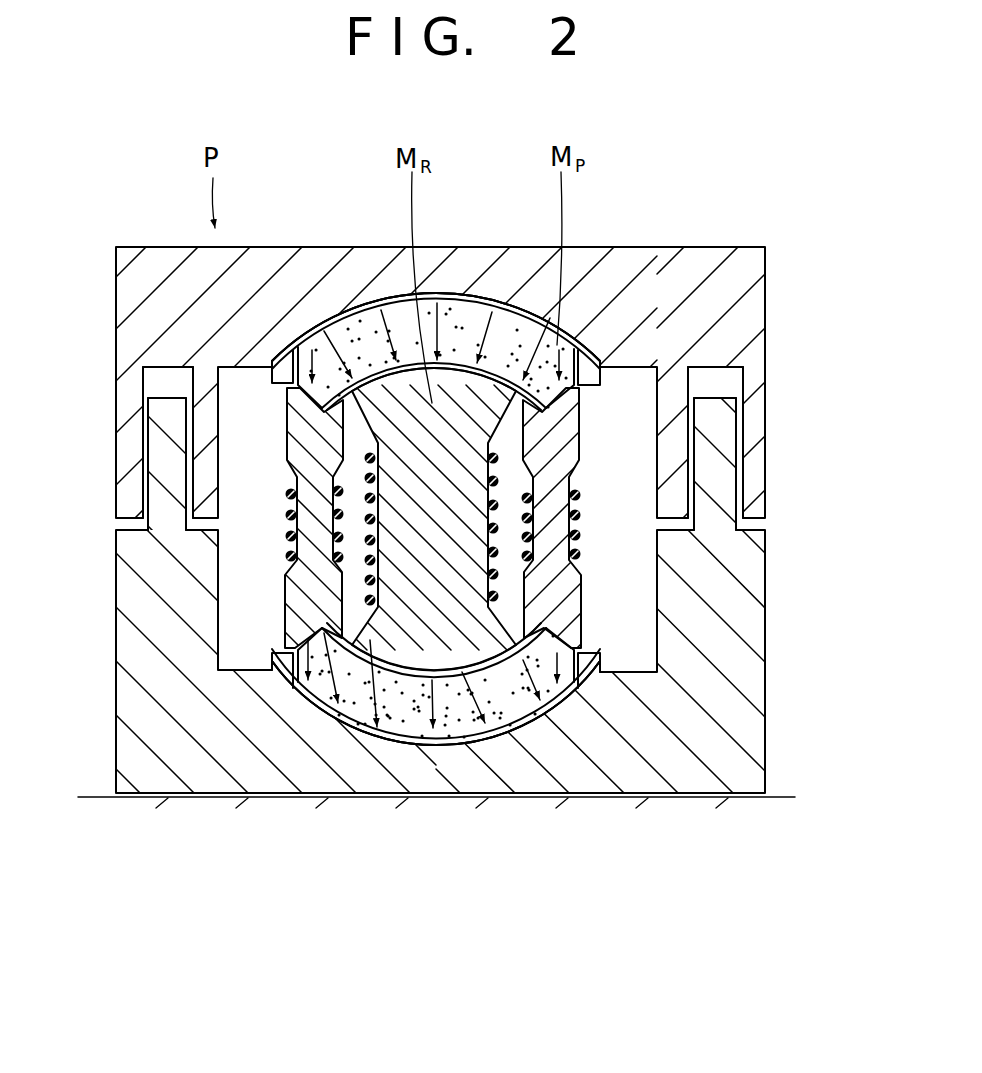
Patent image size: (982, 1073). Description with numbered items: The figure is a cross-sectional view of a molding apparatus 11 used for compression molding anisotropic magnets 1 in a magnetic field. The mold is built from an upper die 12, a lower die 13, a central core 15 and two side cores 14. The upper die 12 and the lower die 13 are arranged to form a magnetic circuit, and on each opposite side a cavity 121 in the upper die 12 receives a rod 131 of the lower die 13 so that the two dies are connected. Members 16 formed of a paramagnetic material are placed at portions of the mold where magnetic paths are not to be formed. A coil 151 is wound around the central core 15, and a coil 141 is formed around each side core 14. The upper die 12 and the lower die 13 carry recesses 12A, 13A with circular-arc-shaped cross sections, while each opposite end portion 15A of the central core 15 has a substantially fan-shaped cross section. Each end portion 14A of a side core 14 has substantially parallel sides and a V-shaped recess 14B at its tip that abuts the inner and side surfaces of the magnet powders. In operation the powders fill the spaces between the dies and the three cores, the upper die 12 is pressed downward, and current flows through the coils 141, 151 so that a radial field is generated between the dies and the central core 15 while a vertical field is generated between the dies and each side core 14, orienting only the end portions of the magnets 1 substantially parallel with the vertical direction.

The molding apparatus 11 is at (710, 227).
The upper die 12 is at (607, 247).
The recess 12A is at (356, 325).
The lower die 13 is at (632, 775).
The recess 13A is at (495, 733).
The cavity 121 is at (163, 382).
The rod 131 is at (160, 450).
The side core 14 is at (288, 597).
The end portion of side core 14A is at (570, 607).
The recess 14B is at (593, 313).
The coil 141 is at (287, 493).
The central core 15 is at (373, 637).
The coil 151 is at (374, 600).
The end portion of central core 15A is at (433, 310).
The paramagnetic members 16 is at (275, 386).
The anisotropic magnet 1 is at (470, 313).